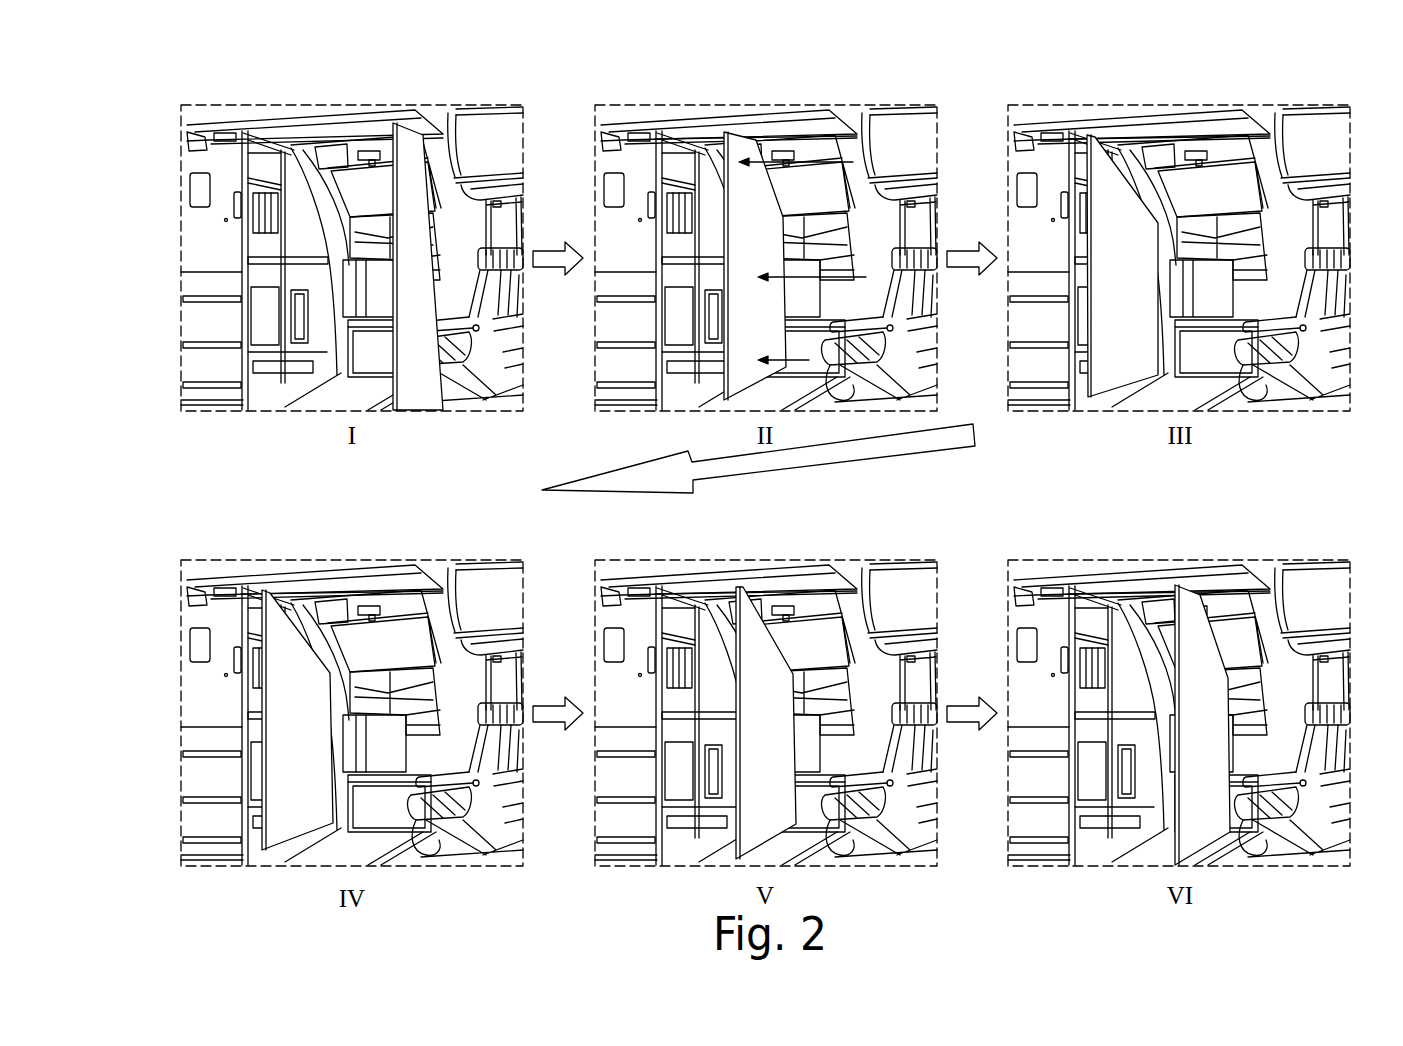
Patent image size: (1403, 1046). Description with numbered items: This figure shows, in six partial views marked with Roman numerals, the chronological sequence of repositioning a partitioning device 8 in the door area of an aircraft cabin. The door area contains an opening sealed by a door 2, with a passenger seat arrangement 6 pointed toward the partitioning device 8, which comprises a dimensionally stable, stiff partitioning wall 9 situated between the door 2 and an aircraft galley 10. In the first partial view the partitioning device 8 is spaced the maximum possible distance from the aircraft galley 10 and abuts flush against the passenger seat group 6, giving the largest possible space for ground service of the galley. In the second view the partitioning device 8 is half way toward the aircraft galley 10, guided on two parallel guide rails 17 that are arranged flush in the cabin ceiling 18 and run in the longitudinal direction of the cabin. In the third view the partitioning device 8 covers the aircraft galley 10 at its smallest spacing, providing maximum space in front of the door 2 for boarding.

The door 2 is at (362, 197).
The passenger seat arrangement 6 is at (510, 235).
The partitioning device 8 is at (405, 378).
The partitioning wall 9 is at (409, 292).
The aircraft galley 10 is at (200, 247).
The guide rails 17 is at (402, 118).
The cabin ceiling 18 is at (800, 110).